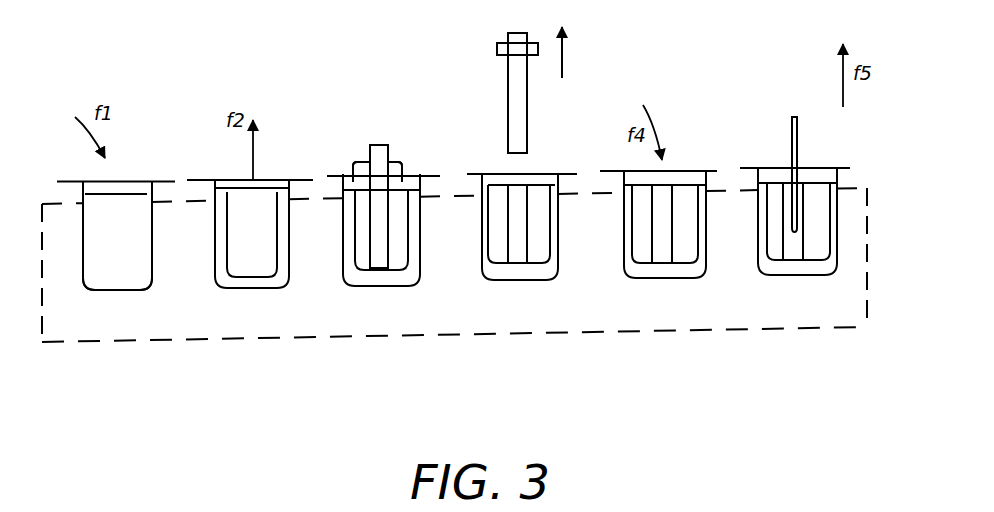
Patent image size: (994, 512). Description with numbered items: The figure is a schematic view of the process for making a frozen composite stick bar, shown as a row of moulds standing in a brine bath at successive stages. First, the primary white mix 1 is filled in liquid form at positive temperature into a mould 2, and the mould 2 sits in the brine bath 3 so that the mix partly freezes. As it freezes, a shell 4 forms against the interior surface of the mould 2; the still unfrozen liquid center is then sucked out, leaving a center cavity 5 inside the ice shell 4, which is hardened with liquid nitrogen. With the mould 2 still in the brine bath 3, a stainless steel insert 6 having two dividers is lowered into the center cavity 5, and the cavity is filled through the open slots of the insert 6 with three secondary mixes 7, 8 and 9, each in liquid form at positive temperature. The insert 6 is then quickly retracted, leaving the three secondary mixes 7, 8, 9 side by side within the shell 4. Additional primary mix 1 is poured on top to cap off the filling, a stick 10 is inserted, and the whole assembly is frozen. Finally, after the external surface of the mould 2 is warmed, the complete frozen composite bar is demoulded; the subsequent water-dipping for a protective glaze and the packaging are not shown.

The primary white mix 1 is at (122, 210).
The mould 2 is at (93, 298).
The brine bath 3 is at (230, 325).
The shell 4 is at (270, 278).
The center cavity 5 is at (260, 197).
The stainless steel insert 6 is at (372, 212).
The first secondary mix 7 is at (360, 148).
The second secondary mix 8 is at (377, 138).
The third secondary mix 9 is at (402, 148).
The stick 10 is at (787, 137).